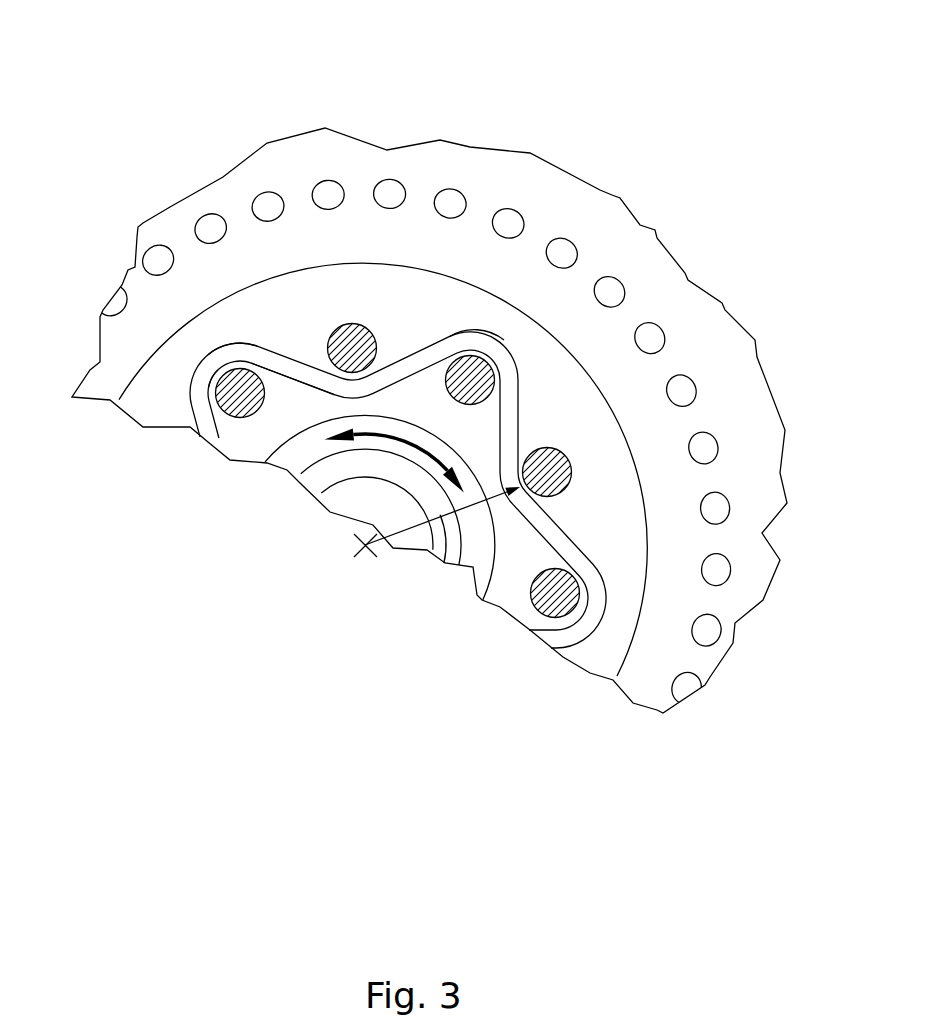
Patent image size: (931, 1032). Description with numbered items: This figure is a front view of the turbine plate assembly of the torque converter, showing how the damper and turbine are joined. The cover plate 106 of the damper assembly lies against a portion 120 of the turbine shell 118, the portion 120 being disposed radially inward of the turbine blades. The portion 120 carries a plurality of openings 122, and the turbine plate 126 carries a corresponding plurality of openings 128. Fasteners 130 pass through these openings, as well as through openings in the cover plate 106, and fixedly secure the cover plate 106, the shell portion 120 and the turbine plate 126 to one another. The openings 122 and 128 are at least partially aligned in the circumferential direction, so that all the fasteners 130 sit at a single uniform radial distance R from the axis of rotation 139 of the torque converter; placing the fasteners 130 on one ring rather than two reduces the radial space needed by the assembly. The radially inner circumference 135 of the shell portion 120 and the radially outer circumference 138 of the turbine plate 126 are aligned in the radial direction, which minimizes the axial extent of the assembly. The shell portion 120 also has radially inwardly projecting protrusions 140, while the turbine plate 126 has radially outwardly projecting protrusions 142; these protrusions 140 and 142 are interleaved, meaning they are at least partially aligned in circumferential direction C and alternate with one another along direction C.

The cover plate 106 is at (209, 461).
The shell 118 is at (365, 177).
The portion 120 is at (272, 318).
The openings 122 is at (565, 456).
The turbine plate 126 is at (507, 542).
The openings 128 is at (228, 412).
The fasteners 130 is at (356, 344).
The radially inner circumference 135 is at (470, 330).
The radially outer circumference 138 is at (238, 357).
The axis of rotation 139 is at (365, 547).
The protrusions 140 is at (333, 373).
The protrusions 142 is at (208, 372).
The circumferential direction C is at (327, 509).
The radial distance R is at (445, 562).